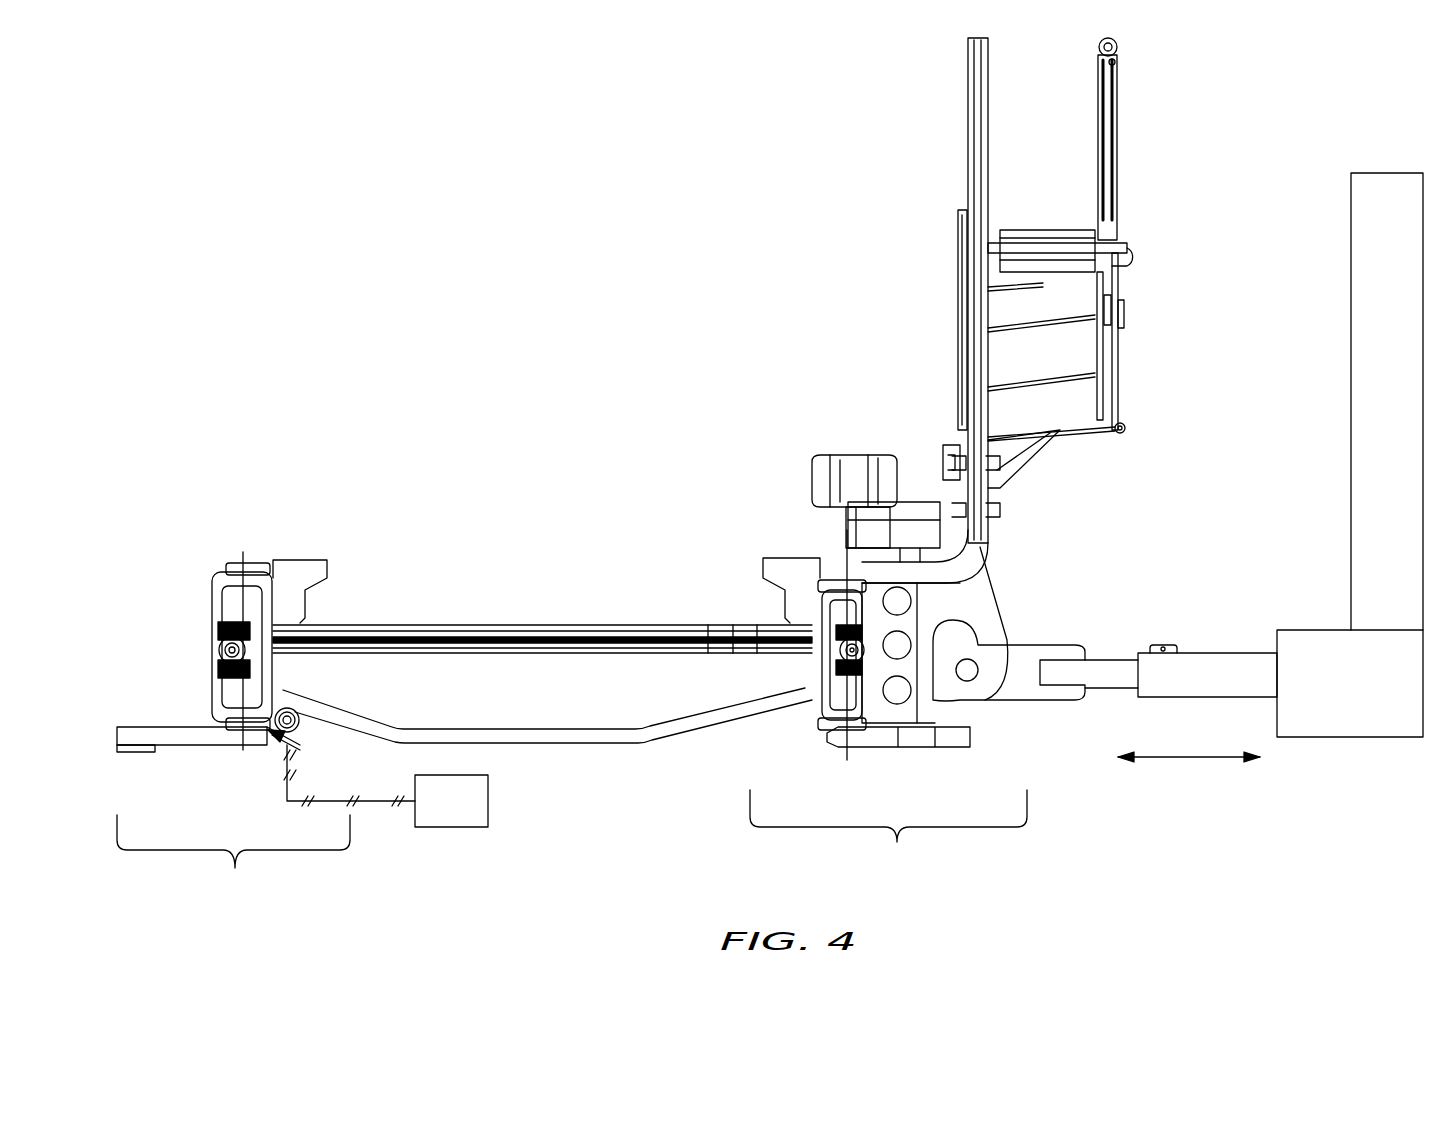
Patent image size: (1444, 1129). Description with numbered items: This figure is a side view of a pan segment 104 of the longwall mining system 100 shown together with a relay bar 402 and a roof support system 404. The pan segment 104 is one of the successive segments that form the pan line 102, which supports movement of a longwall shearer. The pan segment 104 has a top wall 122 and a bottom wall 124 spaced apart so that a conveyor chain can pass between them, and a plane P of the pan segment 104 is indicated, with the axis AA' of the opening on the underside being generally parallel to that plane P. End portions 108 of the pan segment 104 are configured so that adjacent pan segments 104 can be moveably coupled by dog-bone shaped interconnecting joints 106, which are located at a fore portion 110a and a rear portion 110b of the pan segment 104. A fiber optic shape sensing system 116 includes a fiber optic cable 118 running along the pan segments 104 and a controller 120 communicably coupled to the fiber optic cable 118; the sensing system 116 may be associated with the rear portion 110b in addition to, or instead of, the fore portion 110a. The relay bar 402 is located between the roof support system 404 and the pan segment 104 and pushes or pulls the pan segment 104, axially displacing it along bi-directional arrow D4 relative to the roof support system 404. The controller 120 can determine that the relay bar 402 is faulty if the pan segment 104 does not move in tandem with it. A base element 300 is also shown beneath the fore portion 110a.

The longwall mining system 100 is at (1262, 100).
The pan line 102 is at (290, 188).
The pan segment 104 is at (500, 336).
The interconnecting joint 106 is at (215, 652).
The end portion 108 is at (222, 613).
The fore portion 110a is at (233, 859).
The rear portion 110b is at (917, 666).
The fiber optic shape sensing (FOSS) system 116 is at (267, 737).
The fiber optic cable 118 is at (287, 708).
The controller 120 is at (451, 801).
The top wall 122 is at (497, 623).
The bottom wall 124 is at (607, 735).
The floor plate 300 is at (225, 781).
The relay bar 402 is at (1233, 640).
The roof support system 404 is at (1350, 281).
The plane P is at (607, 623).
The bi-directional arrow D4 is at (1189, 745).
The axis AA is at (300, 745).